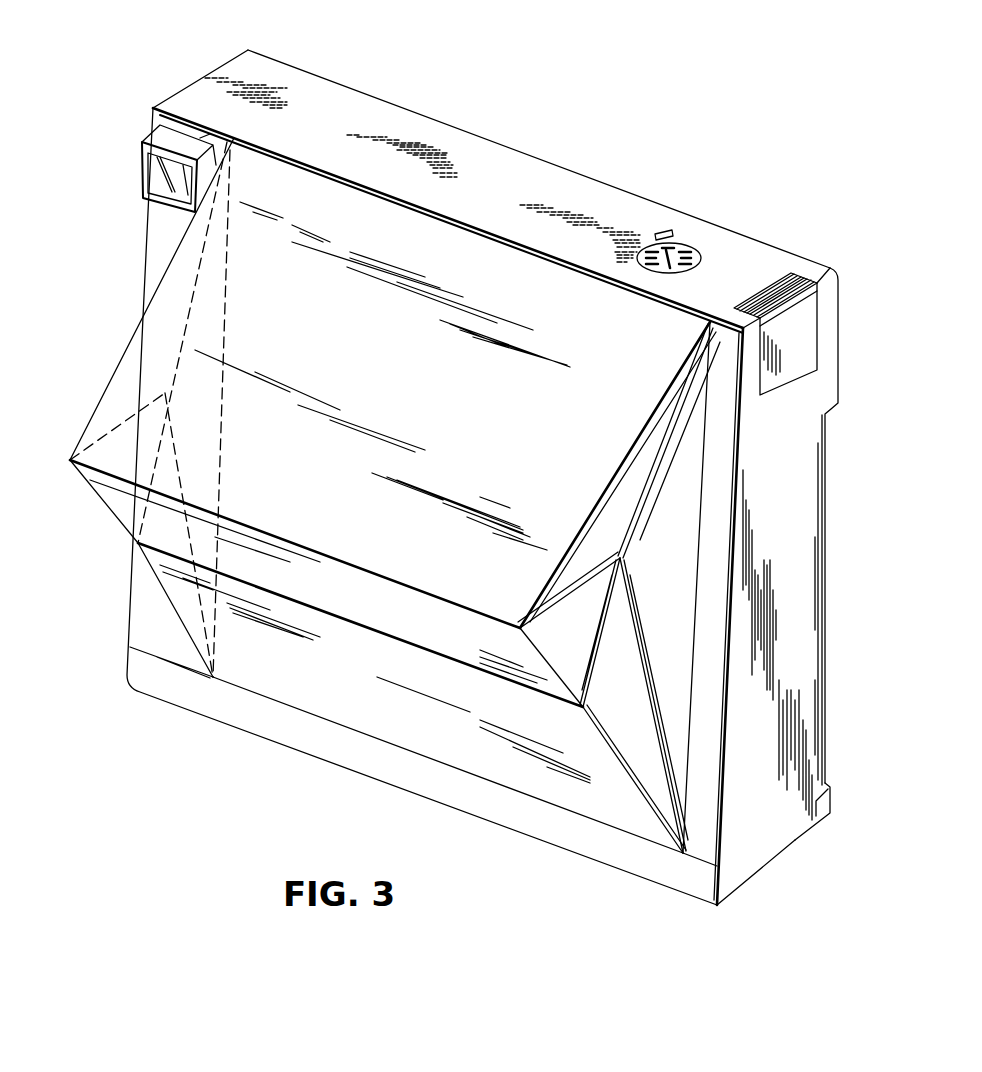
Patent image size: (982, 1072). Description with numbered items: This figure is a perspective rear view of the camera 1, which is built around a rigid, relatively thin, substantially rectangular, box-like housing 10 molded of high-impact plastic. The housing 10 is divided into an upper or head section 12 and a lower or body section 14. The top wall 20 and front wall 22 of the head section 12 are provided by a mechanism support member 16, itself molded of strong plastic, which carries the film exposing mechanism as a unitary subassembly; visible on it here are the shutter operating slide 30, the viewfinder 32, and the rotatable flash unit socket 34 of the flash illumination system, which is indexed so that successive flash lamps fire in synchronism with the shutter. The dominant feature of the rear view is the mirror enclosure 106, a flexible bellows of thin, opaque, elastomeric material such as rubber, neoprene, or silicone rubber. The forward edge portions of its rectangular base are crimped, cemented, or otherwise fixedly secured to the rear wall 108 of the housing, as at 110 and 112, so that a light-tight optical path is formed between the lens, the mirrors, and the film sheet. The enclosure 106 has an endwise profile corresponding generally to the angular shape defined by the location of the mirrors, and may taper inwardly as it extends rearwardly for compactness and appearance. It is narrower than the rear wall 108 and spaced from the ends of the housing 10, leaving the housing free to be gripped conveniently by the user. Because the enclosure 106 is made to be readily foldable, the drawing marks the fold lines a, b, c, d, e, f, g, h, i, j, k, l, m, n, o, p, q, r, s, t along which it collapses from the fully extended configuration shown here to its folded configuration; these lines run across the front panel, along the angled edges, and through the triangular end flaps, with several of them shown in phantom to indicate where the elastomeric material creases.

The camera 1 is at (197, 735).
The housing 10 is at (343, 768).
The head section 12 is at (455, 123).
The body section 14 is at (822, 763).
The mechanism support member 16 is at (323, 90).
The top wall 20 is at (303, 146).
The front wall 22 is at (837, 288).
The shutter operating slide 30 is at (795, 315).
The viewfinder 32 is at (150, 190).
The rotatable flash unit socket 34 is at (690, 245).
The mirror enclosure 106 is at (372, 380).
The rear wall 108 is at (140, 668).
The securing location 110 is at (445, 213).
The securing location 112 is at (443, 772).
The fold line a is at (700, 523).
The fold line b is at (337, 723).
The fold line c is at (228, 250).
The fold line d is at (512, 248).
The fold line e is at (617, 462).
The fold line f is at (388, 563).
The fold line g is at (110, 375).
The fold line h is at (530, 647).
The fold line i is at (373, 640).
The fold line j is at (108, 510).
The fold line k is at (608, 747).
The fold line l is at (150, 572).
The fold line m is at (647, 492).
The fold line n is at (637, 603).
The fold line o is at (600, 660).
The fold line p is at (573, 592).
The fold line q is at (193, 308).
The fold line r is at (175, 435).
The fold line s is at (153, 462).
The fold line t is at (93, 443).